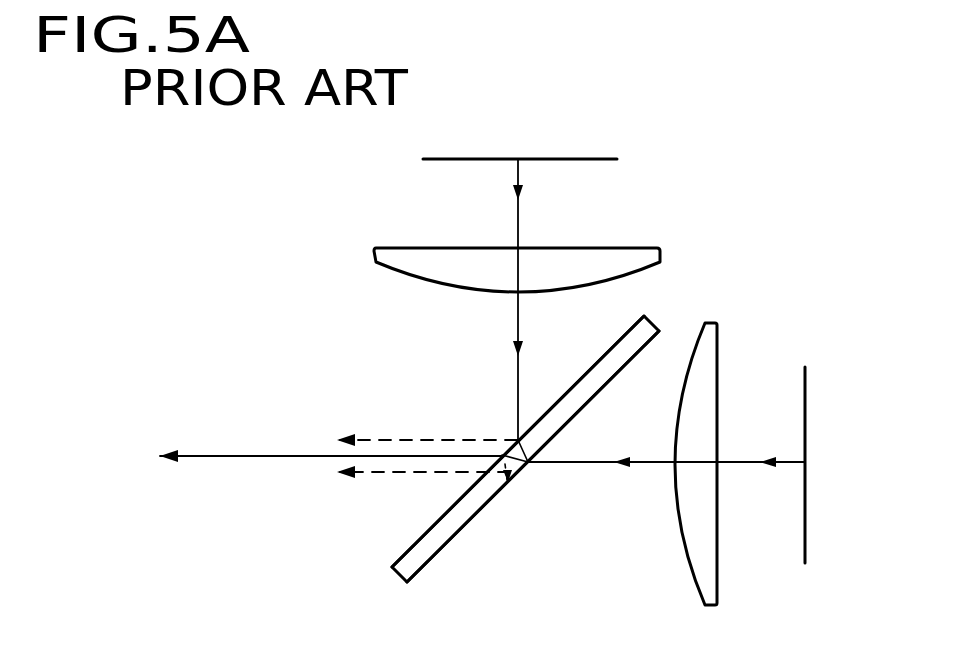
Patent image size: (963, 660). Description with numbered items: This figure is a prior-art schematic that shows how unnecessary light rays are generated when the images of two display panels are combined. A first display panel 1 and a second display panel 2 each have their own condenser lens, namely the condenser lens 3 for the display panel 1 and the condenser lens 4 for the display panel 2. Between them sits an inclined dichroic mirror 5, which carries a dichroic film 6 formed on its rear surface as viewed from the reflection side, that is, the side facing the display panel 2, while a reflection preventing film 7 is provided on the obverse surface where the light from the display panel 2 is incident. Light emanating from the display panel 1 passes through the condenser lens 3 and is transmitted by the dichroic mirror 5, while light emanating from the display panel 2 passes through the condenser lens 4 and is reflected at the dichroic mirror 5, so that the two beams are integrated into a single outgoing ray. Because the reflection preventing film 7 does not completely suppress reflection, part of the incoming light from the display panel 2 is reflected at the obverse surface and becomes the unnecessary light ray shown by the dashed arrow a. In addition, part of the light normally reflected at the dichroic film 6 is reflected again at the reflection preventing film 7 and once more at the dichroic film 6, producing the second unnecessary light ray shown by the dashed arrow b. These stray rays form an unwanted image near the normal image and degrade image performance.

The display panel 1 is at (812, 510).
The display panel 2 is at (575, 158).
The condenser lens 3 is at (690, 577).
The condenser lens 4 is at (392, 257).
The dichroic mirror 5 is at (445, 538).
The dichroic film 6 is at (467, 525).
The reflection preventing film 7 is at (580, 378).
The unnecessary light ray a is at (382, 440).
The unnecessary light ray b is at (386, 474).